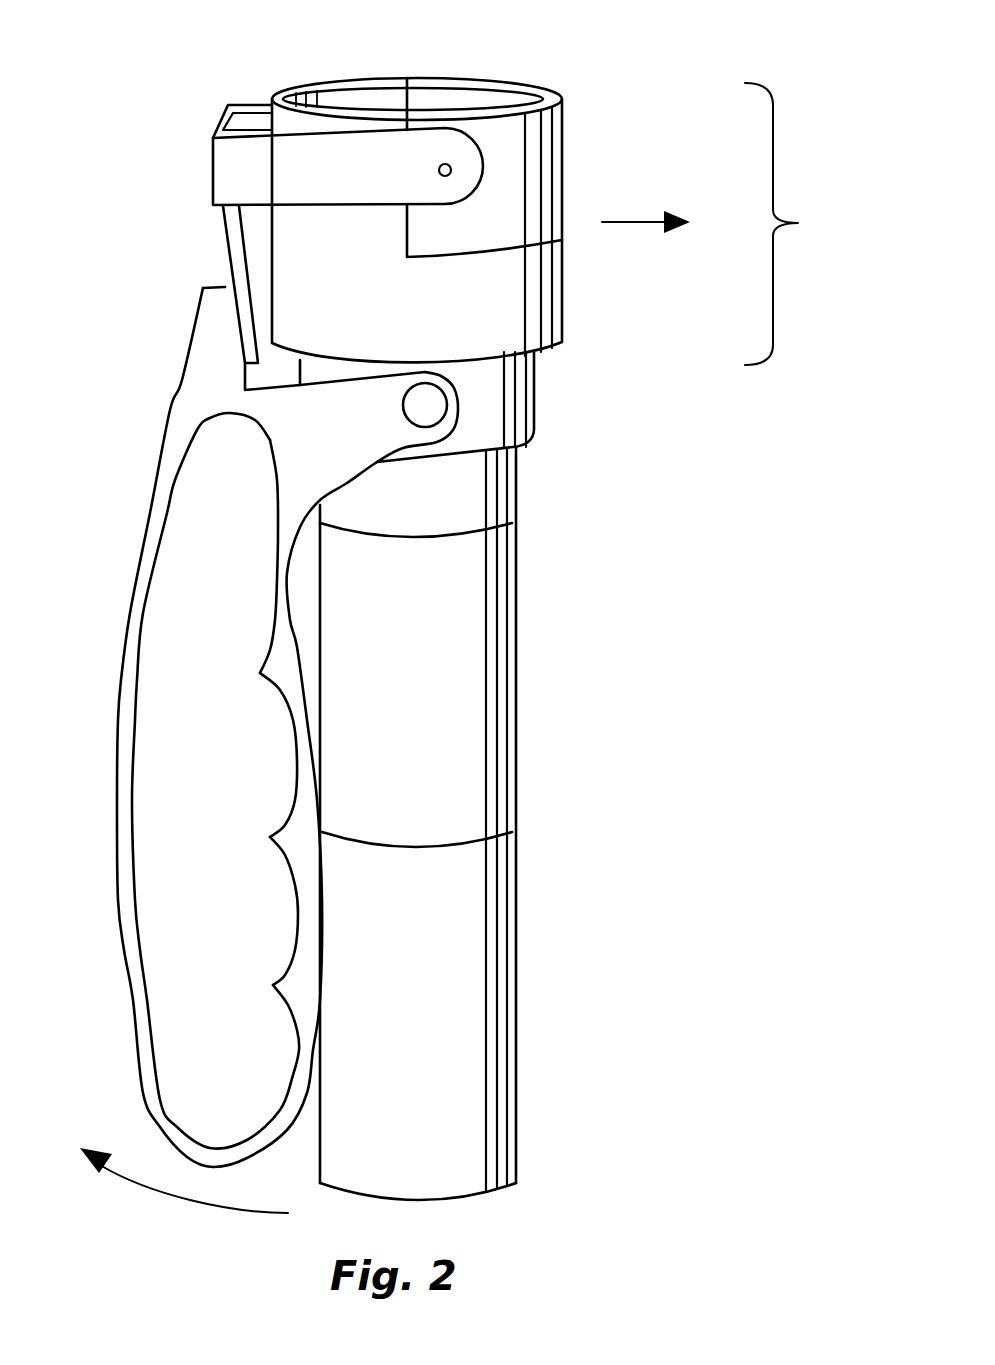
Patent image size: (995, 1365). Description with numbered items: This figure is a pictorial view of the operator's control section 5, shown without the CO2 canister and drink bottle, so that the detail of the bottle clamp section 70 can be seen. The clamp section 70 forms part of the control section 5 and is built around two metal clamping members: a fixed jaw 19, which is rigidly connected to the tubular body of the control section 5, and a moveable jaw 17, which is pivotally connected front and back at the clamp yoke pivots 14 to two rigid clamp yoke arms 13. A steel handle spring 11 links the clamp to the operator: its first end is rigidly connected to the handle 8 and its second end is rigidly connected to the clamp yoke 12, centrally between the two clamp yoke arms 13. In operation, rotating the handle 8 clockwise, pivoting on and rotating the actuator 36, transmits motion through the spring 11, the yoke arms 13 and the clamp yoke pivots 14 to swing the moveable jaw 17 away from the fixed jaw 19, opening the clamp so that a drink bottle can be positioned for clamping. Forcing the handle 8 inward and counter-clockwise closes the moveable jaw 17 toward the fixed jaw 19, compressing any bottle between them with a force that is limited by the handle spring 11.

The operator's control section 5 is at (772, 554).
The handle 8 is at (122, 682).
The handle spring 11 is at (225, 267).
The clamp yoke 12 is at (212, 140).
The clamp yoke arms 13 is at (257, 108).
The clamp yoke pivots 14 is at (451, 167).
The moveable jaw 17 is at (562, 212).
The fixed jaw 19 is at (363, 78).
The actuator 36 is at (450, 405).
The clamp section 70 is at (494, 187).